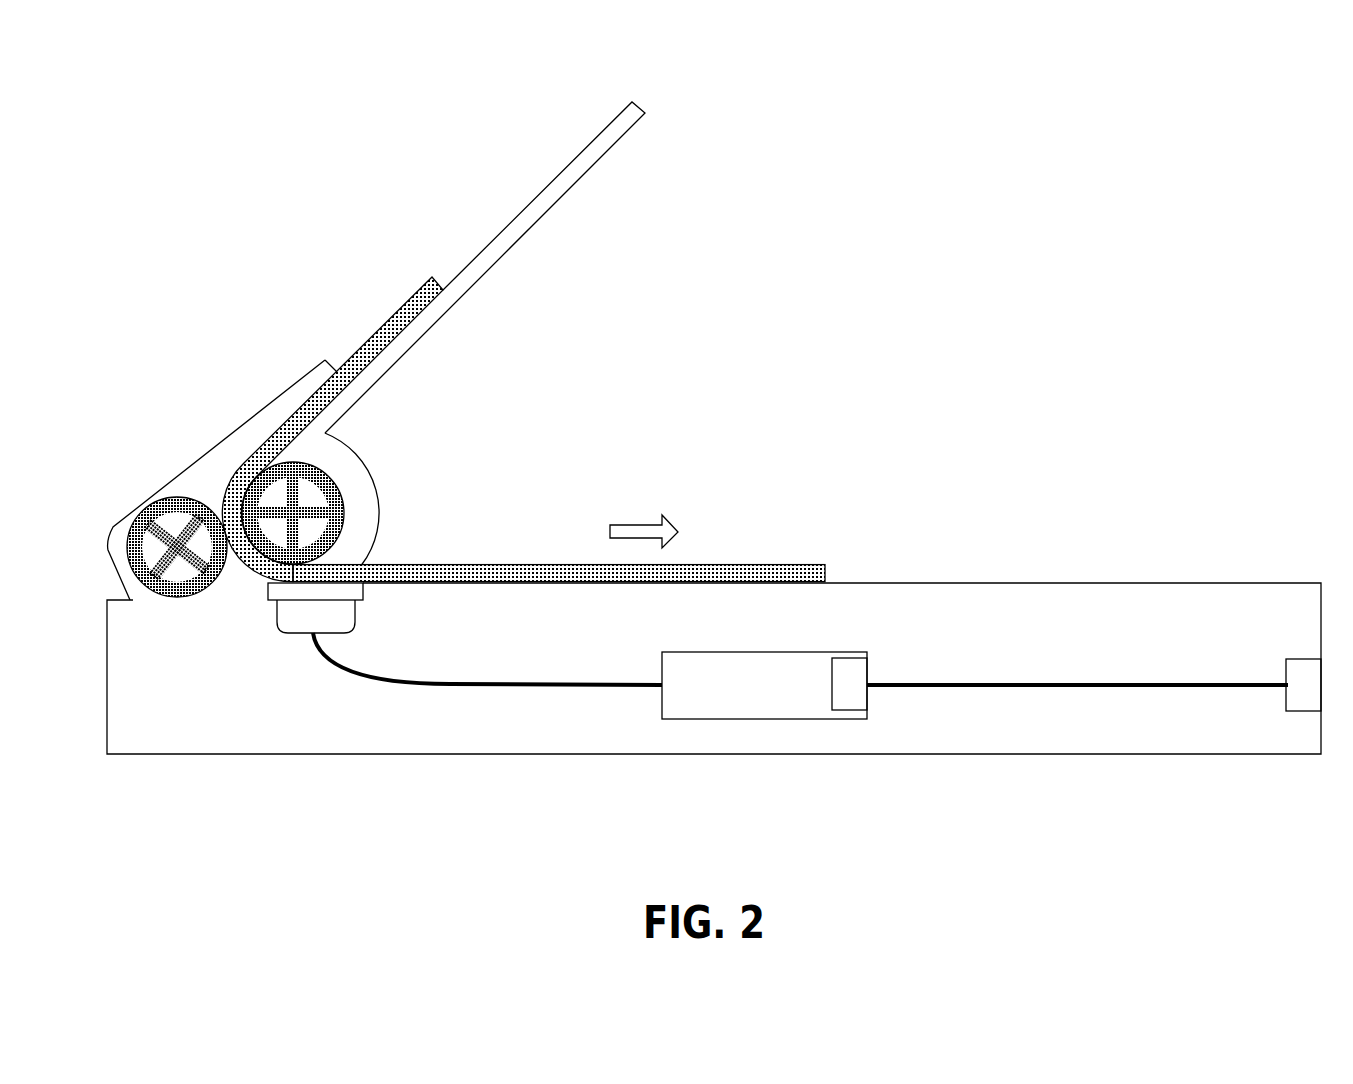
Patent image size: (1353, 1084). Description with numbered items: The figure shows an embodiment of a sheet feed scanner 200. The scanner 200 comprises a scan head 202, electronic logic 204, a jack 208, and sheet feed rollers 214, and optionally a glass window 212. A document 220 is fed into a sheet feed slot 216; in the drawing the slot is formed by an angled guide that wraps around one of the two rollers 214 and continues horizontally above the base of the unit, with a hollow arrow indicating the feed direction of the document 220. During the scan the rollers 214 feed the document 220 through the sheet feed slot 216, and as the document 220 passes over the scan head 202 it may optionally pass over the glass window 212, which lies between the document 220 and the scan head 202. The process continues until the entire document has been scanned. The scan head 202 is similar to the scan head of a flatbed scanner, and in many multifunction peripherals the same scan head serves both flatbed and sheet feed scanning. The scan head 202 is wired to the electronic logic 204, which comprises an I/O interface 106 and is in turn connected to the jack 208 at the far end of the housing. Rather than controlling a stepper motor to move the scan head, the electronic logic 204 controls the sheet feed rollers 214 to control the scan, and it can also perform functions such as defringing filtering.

The scanner 200 is at (946, 305).
The sheet feed slot 216 is at (350, 338).
The document 220 is at (413, 574).
The sheet feed rollers 214 is at (158, 508).
The glass window 212 is at (315, 590).
The scan head 202 is at (315, 615).
The electronic logic 204 is at (764, 685).
The I/O interface 106 is at (849, 685).
The jack 208 is at (1303, 685).